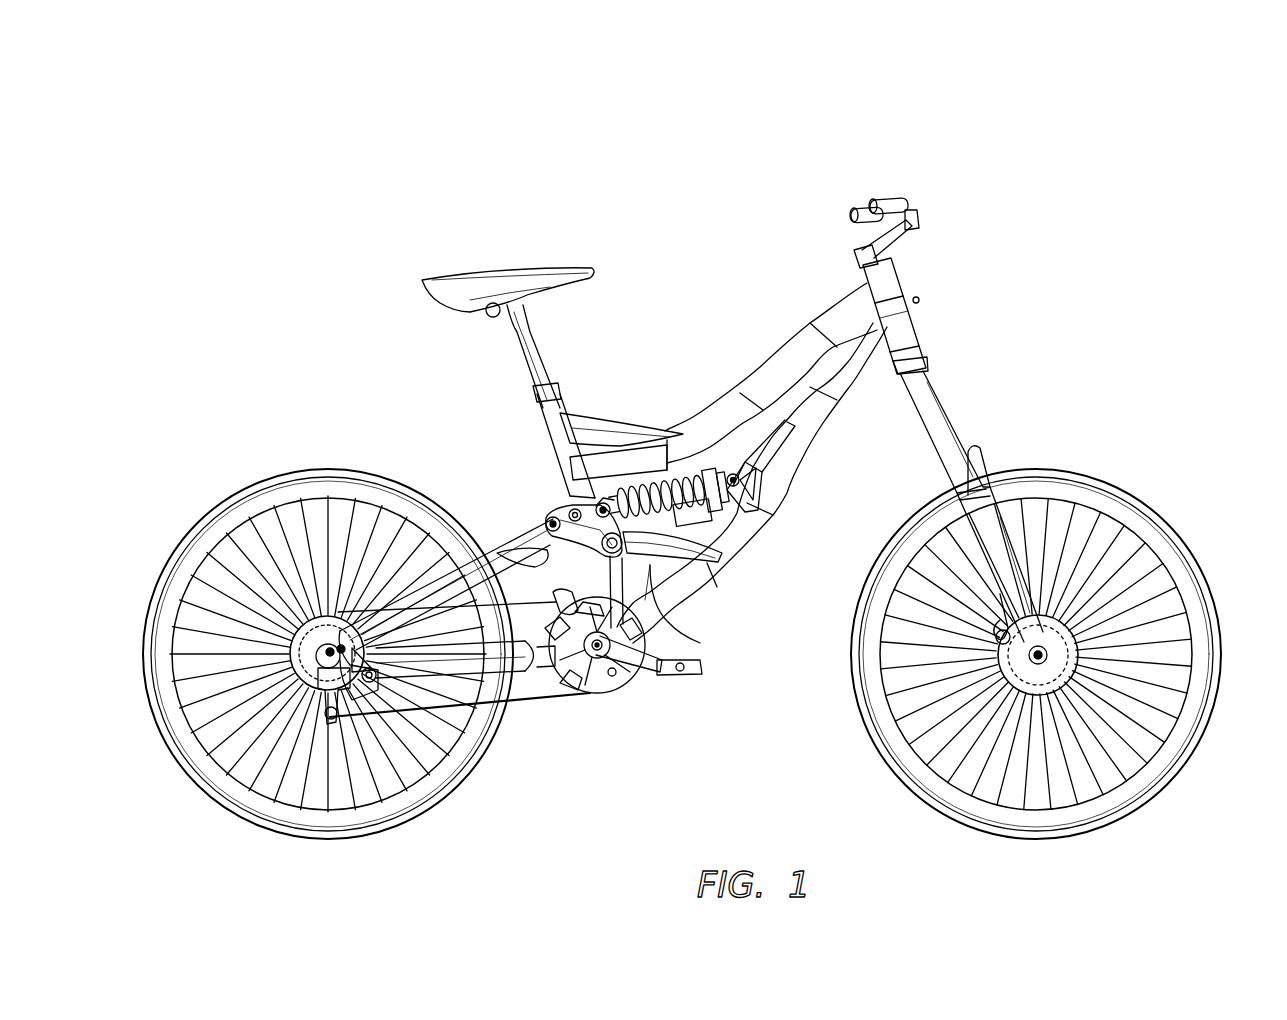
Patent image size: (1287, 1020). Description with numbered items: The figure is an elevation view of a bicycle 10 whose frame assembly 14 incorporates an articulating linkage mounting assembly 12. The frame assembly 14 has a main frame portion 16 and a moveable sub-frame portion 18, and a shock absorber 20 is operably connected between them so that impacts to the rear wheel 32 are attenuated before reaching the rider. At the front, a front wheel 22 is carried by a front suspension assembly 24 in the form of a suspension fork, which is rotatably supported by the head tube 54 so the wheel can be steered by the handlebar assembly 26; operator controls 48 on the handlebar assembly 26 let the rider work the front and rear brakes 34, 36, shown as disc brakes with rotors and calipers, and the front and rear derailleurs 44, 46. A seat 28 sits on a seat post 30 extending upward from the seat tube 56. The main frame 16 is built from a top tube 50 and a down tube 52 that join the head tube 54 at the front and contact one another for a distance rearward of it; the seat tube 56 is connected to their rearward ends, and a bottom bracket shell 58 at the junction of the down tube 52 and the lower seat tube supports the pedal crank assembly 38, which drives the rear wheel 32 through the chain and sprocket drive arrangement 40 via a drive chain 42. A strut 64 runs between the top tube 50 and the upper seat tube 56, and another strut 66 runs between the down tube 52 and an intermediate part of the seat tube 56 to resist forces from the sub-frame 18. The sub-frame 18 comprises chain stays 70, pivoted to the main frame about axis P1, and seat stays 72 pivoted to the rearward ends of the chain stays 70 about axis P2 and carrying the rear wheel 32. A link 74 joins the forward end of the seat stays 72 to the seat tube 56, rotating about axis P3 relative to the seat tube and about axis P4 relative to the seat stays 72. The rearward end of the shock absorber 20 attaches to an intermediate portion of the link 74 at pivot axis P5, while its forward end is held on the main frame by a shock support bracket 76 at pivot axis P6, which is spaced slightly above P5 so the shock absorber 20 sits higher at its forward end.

The bicycle 10 is at (666, 184).
The articulating linkage mounting assembly 12 is at (550, 496).
The frame assembly 14 is at (665, 388).
The main frame portion 16 is at (828, 441).
The sub-frame portion 18 is at (390, 585).
The shock absorber 20 is at (673, 476).
The front wheel 22 is at (1055, 468).
The front suspension assembly 24 is at (962, 388).
The handlebar assembly 26 is at (847, 178).
The seat 28 is at (503, 268).
The seat post 30 is at (548, 363).
The rear wheel 32 is at (328, 470).
The front brake 34 is at (1076, 659).
The rear brake 36 is at (290, 626).
The pedal crank assembly 38 is at (640, 673).
The chain and sprocket drive arrangement 40 is at (582, 710).
The drive chain 42 is at (532, 700).
The front derailleur 44 is at (558, 602).
The rear derailleur 46 is at (320, 705).
The operator controls 48 is at (892, 197).
The top tube 50 is at (784, 348).
The down tube 52 is at (778, 520).
The head tube 54 is at (918, 300).
The seat tube 56 is at (540, 422).
The bottom bracket shell 58 is at (612, 677).
The strut 64 is at (598, 418).
The strut 66 is at (680, 618).
The chain stays 70 is at (440, 703).
The seat stays 72 is at (420, 605).
The link 74 is at (546, 520).
The shock support bracket 76 is at (793, 421).
The pivot axis P1 is at (606, 647).
The pivot axis P2 is at (378, 690).
The pivot axis P3 is at (740, 562).
The pivot axis P4 is at (600, 552).
The pivot axis P5 is at (556, 498).
The pivot axis P6 is at (750, 485).